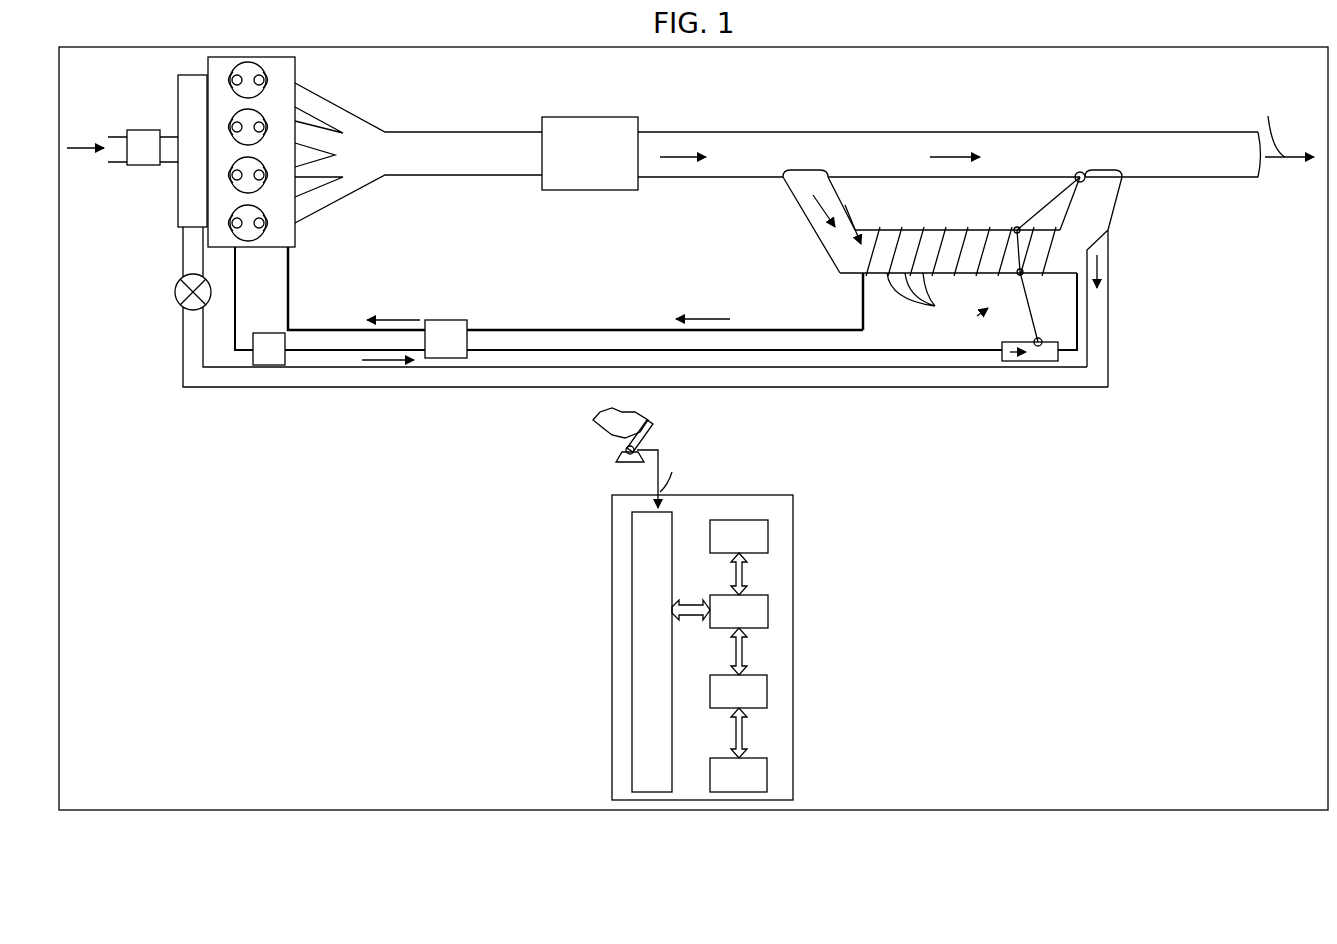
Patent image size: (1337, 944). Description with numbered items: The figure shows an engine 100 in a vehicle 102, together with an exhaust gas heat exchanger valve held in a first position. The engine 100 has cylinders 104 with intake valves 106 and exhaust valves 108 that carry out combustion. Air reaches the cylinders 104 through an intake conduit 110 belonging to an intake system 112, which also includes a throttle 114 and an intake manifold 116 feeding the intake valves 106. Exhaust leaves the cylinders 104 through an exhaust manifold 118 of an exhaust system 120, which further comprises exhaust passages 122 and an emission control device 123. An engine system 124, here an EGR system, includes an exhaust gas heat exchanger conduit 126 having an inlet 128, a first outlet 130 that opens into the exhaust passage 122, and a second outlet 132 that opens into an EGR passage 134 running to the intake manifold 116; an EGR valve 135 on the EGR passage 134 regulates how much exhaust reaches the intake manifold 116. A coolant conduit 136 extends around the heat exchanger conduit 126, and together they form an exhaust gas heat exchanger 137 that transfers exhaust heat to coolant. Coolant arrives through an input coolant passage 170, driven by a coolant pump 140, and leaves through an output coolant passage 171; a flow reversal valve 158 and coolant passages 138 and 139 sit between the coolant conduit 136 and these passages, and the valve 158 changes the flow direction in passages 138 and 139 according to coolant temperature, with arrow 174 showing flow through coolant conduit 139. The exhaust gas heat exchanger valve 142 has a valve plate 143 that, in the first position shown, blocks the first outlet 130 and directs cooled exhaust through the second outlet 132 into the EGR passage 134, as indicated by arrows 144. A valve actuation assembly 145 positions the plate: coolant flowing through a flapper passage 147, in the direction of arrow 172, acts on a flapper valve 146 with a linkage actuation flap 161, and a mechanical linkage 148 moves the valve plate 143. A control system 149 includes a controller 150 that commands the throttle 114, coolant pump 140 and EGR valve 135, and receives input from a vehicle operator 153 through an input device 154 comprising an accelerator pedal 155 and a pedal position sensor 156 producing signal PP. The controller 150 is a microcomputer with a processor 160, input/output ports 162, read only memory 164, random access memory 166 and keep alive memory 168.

The engine 100 is at (207, 62).
The vehicle 102 is at (98, 47).
The cylinders 104 is at (268, 68).
The intake valves 106 is at (234, 85).
The exhaust valves 108 is at (262, 85).
The intake conduit 110 is at (110, 164).
The intake system 112 is at (94, 84).
The throttle 114 is at (143, 166).
The intake manifold 116 is at (178, 220).
The exhaust manifold 118 is at (372, 125).
The exhaust system 120 is at (529, 102).
The exhaust passages 122 is at (450, 132).
The emission control device 123 is at (546, 117).
The engine system 124 is at (1213, 217).
The exhaust gas heat exchanger conduit 126 is at (801, 206).
The inlet 128 is at (805, 162).
The first outlet 130 is at (1091, 189).
The second outlet 132 is at (1099, 240).
The EGR passage 134 is at (1108, 314).
The EGR valve 135 is at (175, 292).
The coolant conduit 136 is at (958, 273).
The exhaust gas heat exchanger 137 is at (860, 216).
The coolant passage 138 is at (1078, 325).
The coolant passage 139 is at (862, 297).
The coolant pump 140 is at (253, 356).
The exhaust gas heat exchanger valve 142 is at (1141, 167).
The valve plate 143 is at (1112, 198).
The arrows 144 is at (655, 157).
The valve actuation assembly 145 is at (978, 325).
The flapper valve 146 is at (1046, 323).
The flapper passage 147 is at (1012, 342).
The mechanical linkage 148 is at (1003, 216).
The control system 149 is at (547, 664).
The controller 150 is at (793, 495).
The vehicle operator 153 is at (612, 420).
The input device 154 is at (684, 437).
The accelerator pedal 155 is at (650, 436).
The pedal position sensor 156 is at (620, 455).
The flow reversal valve 158 is at (428, 320).
The processor 160 is at (768, 610).
The linkage actuation flap 161 is at (1038, 347).
The input/output ports 162 is at (675, 515).
The read only memory 164 is at (768, 535).
The random access memory 166 is at (768, 690).
The keep alive memory 168 is at (768, 775).
The input coolant passage 170 is at (345, 351).
The output coolant passage 171 is at (353, 328).
The arrow 172 is at (1013, 362).
The arrow 174 is at (703, 318).